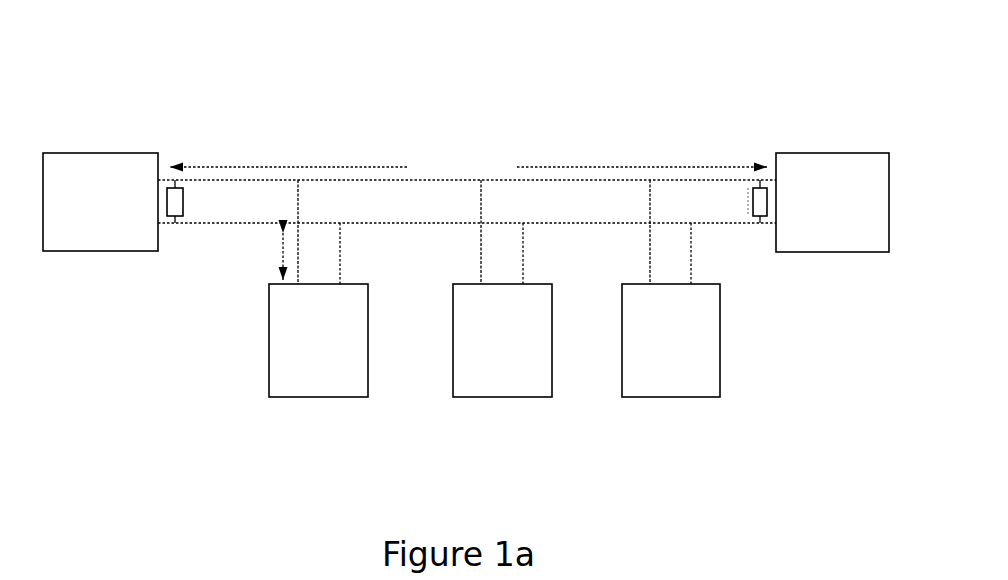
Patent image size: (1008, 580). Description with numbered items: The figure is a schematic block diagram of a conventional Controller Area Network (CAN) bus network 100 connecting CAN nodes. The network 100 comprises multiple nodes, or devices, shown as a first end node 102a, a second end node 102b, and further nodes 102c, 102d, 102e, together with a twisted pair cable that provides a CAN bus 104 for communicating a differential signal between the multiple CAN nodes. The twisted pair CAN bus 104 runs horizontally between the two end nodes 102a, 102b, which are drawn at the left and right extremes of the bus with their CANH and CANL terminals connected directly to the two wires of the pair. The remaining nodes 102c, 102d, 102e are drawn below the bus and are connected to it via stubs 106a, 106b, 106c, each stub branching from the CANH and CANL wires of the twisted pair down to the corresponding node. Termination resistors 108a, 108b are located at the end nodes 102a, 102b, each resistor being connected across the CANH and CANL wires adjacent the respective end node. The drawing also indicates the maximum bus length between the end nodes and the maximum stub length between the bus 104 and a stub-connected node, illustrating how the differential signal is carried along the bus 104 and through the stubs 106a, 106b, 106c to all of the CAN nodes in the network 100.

The CAN bus network 100 is at (377, 85).
The node 102a is at (83, 257).
The node 102b is at (817, 253).
The node 102c is at (312, 408).
The node 102d is at (483, 410).
The node 102e is at (667, 403).
The CAN bus 104 is at (582, 175).
The stub 106a is at (323, 247).
The stub 106b is at (508, 246).
The stub 106c is at (683, 247).
The termination resistor 108a is at (201, 200).
The termination resistor 108b is at (730, 202).